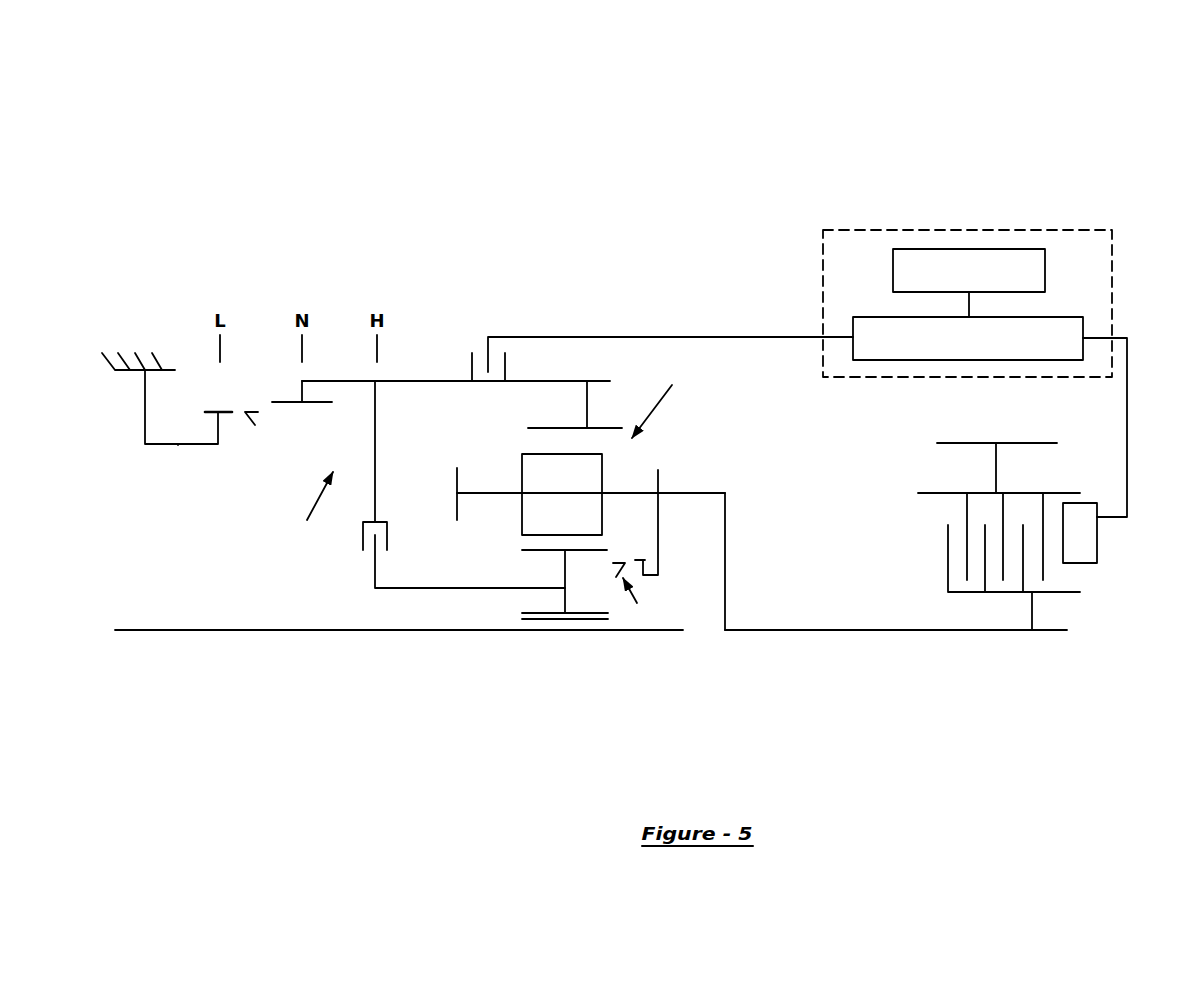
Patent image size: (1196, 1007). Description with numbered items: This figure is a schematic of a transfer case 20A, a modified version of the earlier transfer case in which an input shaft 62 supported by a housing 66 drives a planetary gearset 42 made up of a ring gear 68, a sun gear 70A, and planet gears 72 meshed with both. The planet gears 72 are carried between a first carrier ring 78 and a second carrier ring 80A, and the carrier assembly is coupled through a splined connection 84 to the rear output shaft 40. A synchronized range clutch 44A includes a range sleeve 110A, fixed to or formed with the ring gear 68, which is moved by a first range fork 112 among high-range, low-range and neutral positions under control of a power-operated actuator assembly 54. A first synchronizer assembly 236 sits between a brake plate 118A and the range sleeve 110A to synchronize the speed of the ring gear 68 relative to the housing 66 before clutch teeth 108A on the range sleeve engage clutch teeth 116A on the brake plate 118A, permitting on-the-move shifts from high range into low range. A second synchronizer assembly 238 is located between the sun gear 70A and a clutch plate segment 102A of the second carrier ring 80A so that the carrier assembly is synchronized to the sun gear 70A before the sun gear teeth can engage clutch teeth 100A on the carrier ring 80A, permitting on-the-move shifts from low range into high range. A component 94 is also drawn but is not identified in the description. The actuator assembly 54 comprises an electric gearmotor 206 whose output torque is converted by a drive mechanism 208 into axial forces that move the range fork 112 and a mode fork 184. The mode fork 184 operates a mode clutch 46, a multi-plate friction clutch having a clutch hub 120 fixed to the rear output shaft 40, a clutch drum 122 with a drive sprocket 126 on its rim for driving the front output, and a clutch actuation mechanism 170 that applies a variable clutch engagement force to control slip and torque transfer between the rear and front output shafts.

The transfer case 20A is at (718, 238).
The rear output shaft 40 is at (858, 632).
The planetary gearset 42 is at (658, 399).
The synchronized range clutch 44A is at (307, 518).
The mode clutch 46 is at (1068, 435).
The power-operated actuator assembly 54 is at (1100, 267).
The input shaft 62 is at (330, 632).
The housing 66 is at (143, 422).
The ring gear 68 is at (605, 428).
The sun gear 70A is at (563, 575).
The planet gears 72 is at (537, 470).
The first carrier ring 78 is at (453, 480).
The second carrier ring 80A is at (725, 585).
The splined connection 84 is at (572, 622).
The shift fork 94 is at (377, 458).
The clutch teeth 100A is at (640, 557).
The clutch plate segment 102A is at (658, 537).
The clutch teeth 108A is at (318, 402).
The range sleeve 110A is at (407, 380).
The first range fork 112 is at (525, 335).
The clutch teeth 116A is at (215, 408).
The brake plate 118A is at (178, 445).
The clutch hub 120 is at (1032, 608).
The clutch drum 122 is at (937, 492).
The drive sprocket 126 is at (945, 442).
The clutch actuation mechanism 170 is at (1092, 545).
The mode fork 184 is at (1127, 430).
The electric gearmotor 206 is at (893, 268).
The drive mechanism 208 is at (1050, 317).
The synchronizer assembly 236 is at (258, 432).
The second synchronizer assembly 238 is at (641, 603).